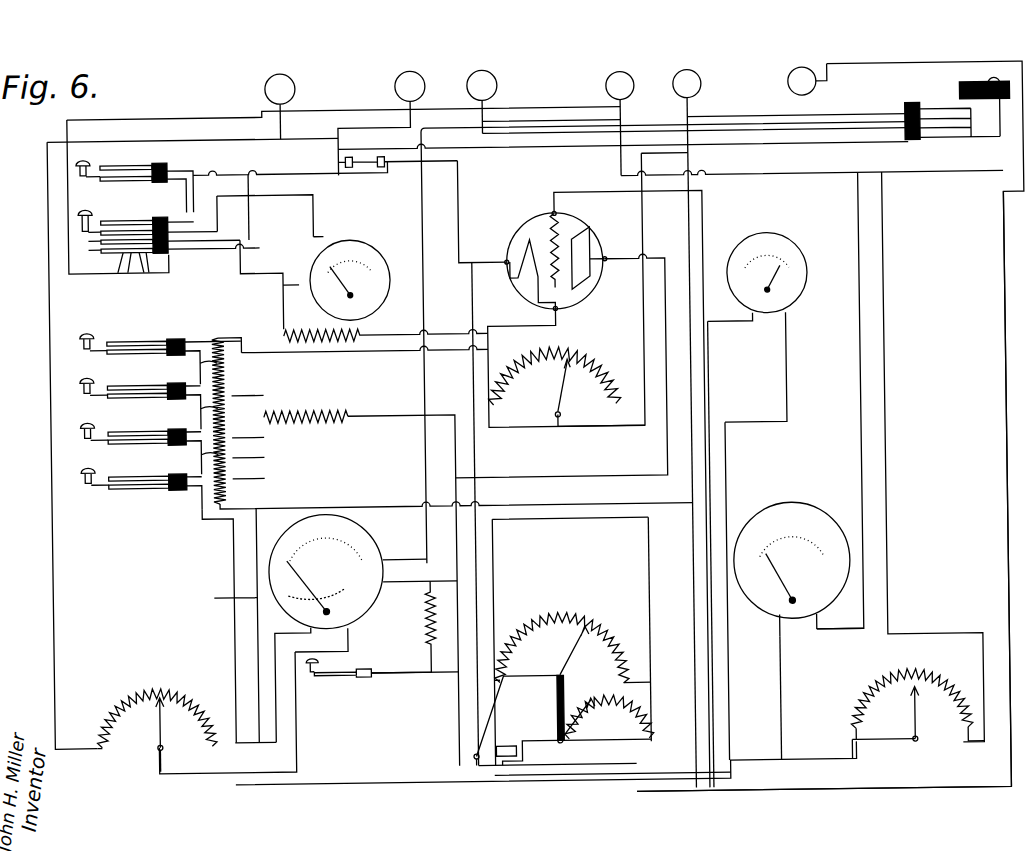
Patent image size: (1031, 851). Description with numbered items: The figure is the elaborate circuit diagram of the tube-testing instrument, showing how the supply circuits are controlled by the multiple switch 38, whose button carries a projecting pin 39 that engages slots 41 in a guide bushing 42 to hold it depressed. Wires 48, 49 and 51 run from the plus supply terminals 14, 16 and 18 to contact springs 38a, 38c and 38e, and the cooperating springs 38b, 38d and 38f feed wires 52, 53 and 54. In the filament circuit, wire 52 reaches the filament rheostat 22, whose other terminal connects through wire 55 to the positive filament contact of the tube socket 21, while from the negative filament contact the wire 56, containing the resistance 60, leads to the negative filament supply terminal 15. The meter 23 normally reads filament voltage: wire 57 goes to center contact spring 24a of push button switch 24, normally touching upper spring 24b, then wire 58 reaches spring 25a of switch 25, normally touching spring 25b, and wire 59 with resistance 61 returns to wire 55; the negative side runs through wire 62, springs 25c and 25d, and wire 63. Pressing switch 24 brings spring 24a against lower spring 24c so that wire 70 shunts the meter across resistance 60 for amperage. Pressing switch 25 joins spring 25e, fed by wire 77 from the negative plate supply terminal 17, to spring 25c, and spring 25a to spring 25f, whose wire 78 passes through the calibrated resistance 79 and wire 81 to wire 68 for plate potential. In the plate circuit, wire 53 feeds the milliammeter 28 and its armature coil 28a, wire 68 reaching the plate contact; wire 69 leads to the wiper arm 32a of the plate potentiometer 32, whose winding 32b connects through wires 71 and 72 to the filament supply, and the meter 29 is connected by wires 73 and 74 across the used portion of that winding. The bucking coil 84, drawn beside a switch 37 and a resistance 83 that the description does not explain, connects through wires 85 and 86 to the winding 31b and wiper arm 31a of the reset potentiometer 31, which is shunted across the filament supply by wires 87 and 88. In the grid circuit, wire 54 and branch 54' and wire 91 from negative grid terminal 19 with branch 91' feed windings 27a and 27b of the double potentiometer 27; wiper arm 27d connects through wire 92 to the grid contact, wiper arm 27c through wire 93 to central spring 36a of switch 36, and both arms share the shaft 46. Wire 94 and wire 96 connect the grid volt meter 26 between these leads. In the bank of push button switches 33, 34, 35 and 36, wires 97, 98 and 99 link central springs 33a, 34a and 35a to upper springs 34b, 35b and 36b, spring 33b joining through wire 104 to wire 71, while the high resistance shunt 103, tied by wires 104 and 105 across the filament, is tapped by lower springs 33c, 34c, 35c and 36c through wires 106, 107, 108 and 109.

The positive filament supply terminal 14 is at (281, 78).
The negative filament supply terminal 15 is at (413, 76).
The positive plate supply terminal 16 is at (486, 75).
The negative plate supply terminal 17 is at (624, 76).
The positive grid supply terminal 18 is at (691, 75).
The negative grid supply terminal 19 is at (804, 71).
The tube socket 21 is at (581, 220).
The filament rheostat 22 is at (533, 407).
The meter 23 is at (364, 243).
The push button switch 24 is at (80, 166).
The center contact spring 24a is at (91, 171).
The upper contact spring 24b is at (121, 161).
The lower contact spring 24c is at (159, 170).
The push button switch 25 is at (83, 220).
The contact spring 25a is at (91, 236).
The contact spring 25b is at (104, 216).
The contact spring 25c is at (91, 244).
The contact spring 25d is at (123, 264).
The contact spring 25e is at (139, 267).
The contact spring 25f is at (132, 218).
The grid volt meter 26 is at (797, 251).
The double potentiometer 27 is at (579, 605).
The potentiometer winding 27a is at (521, 629).
The potentiometer winding 27b is at (630, 703).
The wiper arm 27c is at (565, 651).
The wiper arm 27d is at (572, 723).
The milliammeter 28 is at (364, 533).
The armature coil 28a is at (276, 620).
The meter 29 is at (807, 506).
The reset potentiometer 31 is at (120, 680).
The wiper arm 31a is at (156, 717).
The potentiometer winding 31b is at (139, 683).
The plate potentiometer 32 is at (915, 685).
The wiper arm 32a is at (911, 713).
The potentiometer winding 32b is at (863, 692).
The push button switch 33 is at (81, 340).
The central contact spring 33a is at (93, 348).
The upper contact spring 33b is at (117, 337).
The lower contact spring 33c is at (161, 353).
The push button switch 34 is at (80, 385).
The central contact spring 34a is at (93, 392).
The upper contact spring 34b is at (119, 382).
The lower contact spring 34c is at (161, 398).
The push button switch 35 is at (80, 430).
The central contact spring 35a is at (93, 437).
The upper contact spring 35b is at (119, 427).
The lower contact spring 35c is at (161, 443).
The push button switch 36 is at (80, 476).
The central contact spring 36a is at (93, 483).
The upper contact spring 36b is at (119, 472).
The lower contact spring 36c is at (151, 487).
The switch 37 is at (309, 676).
The multiple switch 38 is at (939, 107).
The contact spring 38a is at (979, 143).
The contact spring 38b is at (984, 144).
The contact spring 38c is at (1004, 144).
The contact spring 38d is at (942, 140).
The contact spring 38e is at (1004, 132).
The contact spring 38f is at (920, 146).
The projecting pin 39 is at (981, 91).
The slots 41 is at (1014, 75).
The guide bushing 42 is at (988, 87).
The shaft 46 is at (548, 721).
The wire 48 is at (303, 136).
The wire 49 is at (532, 116).
The wire 51 is at (722, 115).
The wire 52 is at (801, 153).
The wire 53 is at (776, 147).
The wire 54 is at (665, 424).
The branch 54' is at (667, 629).
The wire 55 is at (489, 348).
The wire 56 is at (374, 110).
The wire 57 is at (318, 211).
The wire 58 is at (196, 168).
The wire 59 is at (241, 259).
The resistance 60 is at (359, 165).
The resistance 61 is at (329, 345).
The wire 62 is at (285, 278).
The wire 63 is at (293, 147).
The wire 68 is at (635, 261).
The wire 69 is at (638, 121).
The wire 70 is at (236, 173).
The wire 71 is at (474, 295).
The wire 72 is at (885, 476).
The wire 73 is at (812, 629).
The wire 74 is at (777, 691).
The wire 77 is at (195, 114).
The wire 78 is at (270, 235).
The calibrated resistance 79 is at (318, 414).
The wire 81 is at (378, 414).
The resistance 83 is at (423, 627).
The bucking coil 84 is at (347, 619).
The wire 85 is at (282, 737).
The wire 86 is at (292, 724).
The wire 87 is at (51, 297).
The wire 88 is at (232, 594).
The wire 91 is at (820, 502).
The branch 91' is at (558, 784).
The wire 92 is at (592, 196).
The wire 93 is at (218, 525).
The wire 94 is at (746, 431).
The wire 96 is at (717, 326).
The wire 97 is at (201, 363).
The wire 98 is at (201, 407).
The wire 99 is at (201, 452).
The high resistance shunt 103 is at (260, 454).
The wire 104 is at (219, 334).
The wire 105 is at (284, 500).
The wire 106 is at (264, 363).
The wire 107 is at (264, 385).
The wire 108 is at (260, 434).
The wire 109 is at (260, 475).